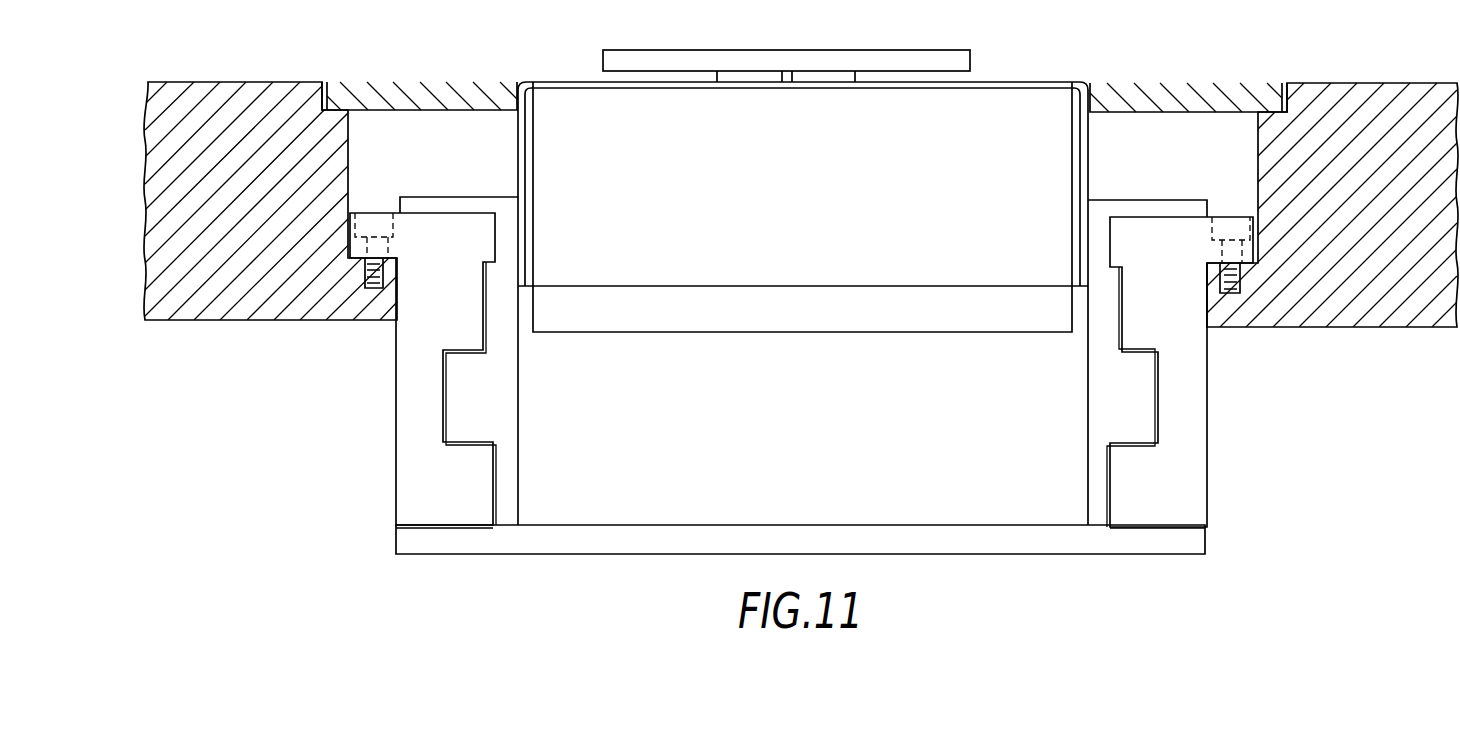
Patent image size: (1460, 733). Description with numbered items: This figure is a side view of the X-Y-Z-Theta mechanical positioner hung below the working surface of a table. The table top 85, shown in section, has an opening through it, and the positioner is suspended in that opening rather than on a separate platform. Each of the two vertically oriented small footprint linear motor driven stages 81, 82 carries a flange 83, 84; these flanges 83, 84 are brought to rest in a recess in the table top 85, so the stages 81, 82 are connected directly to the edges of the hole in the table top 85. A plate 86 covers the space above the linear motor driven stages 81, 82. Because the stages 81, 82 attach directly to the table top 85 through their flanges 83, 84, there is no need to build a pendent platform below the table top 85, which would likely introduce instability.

The vertically oriented small footprint linear motor driven stage 81 is at (403, 352).
The vertically oriented small footprint linear motor driven stage 82 is at (1195, 402).
The flange 83 is at (384, 271).
The flange 84 is at (1221, 280).
The table top 85 is at (1359, 88).
The plate 86 is at (1156, 84).